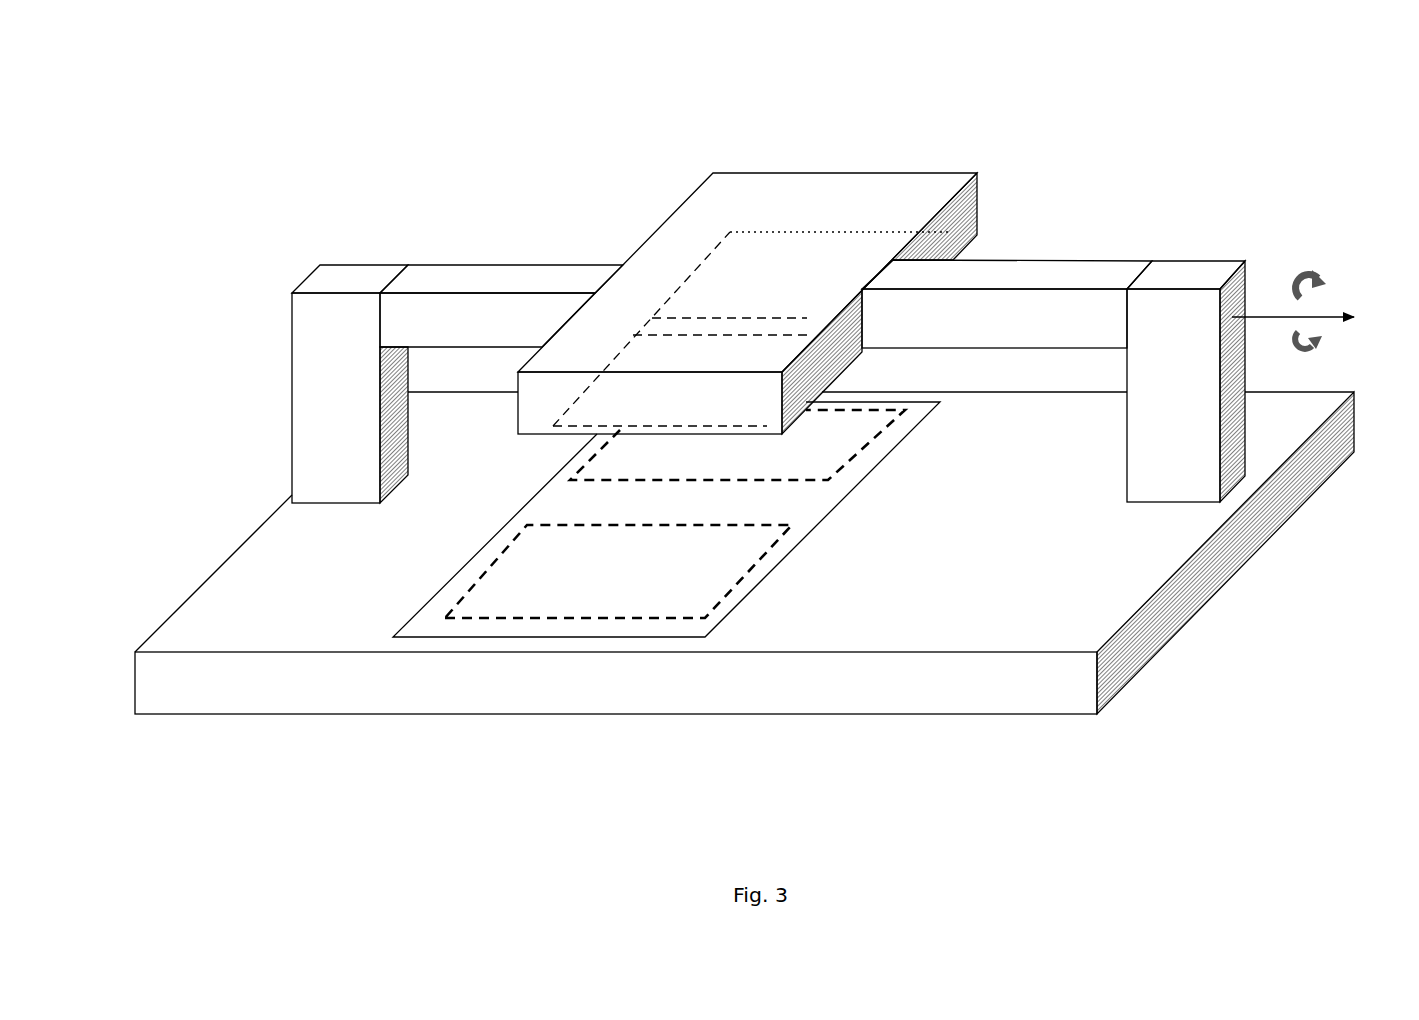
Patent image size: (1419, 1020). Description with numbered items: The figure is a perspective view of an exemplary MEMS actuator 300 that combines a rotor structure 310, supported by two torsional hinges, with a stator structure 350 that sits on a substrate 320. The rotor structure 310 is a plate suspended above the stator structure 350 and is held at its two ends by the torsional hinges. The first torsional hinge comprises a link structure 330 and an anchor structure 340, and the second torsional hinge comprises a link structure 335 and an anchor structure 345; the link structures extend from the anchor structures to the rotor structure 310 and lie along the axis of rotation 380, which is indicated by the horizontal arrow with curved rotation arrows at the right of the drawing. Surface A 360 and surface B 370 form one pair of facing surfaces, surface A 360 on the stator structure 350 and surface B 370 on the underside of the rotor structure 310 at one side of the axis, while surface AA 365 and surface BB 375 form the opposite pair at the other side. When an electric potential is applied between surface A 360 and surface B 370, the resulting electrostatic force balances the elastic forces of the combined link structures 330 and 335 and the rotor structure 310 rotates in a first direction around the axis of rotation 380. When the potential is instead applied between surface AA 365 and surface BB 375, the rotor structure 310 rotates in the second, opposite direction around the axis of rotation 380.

The actuator 300 is at (759, 41).
The rotor structure 310 is at (818, 127).
The substrate 320 is at (408, 694).
The link structure 330 is at (517, 277).
The link structure 335 is at (1062, 274).
The anchor structure 340 is at (343, 277).
The anchor structure 345 is at (1180, 273).
The stator structure 350 is at (520, 641).
The surface A 360 is at (556, 548).
The surface AA 365 is at (813, 461).
The surface B 370 is at (635, 438).
The surface BB 375 is at (762, 272).
The axis of rotation 380 is at (1266, 320).